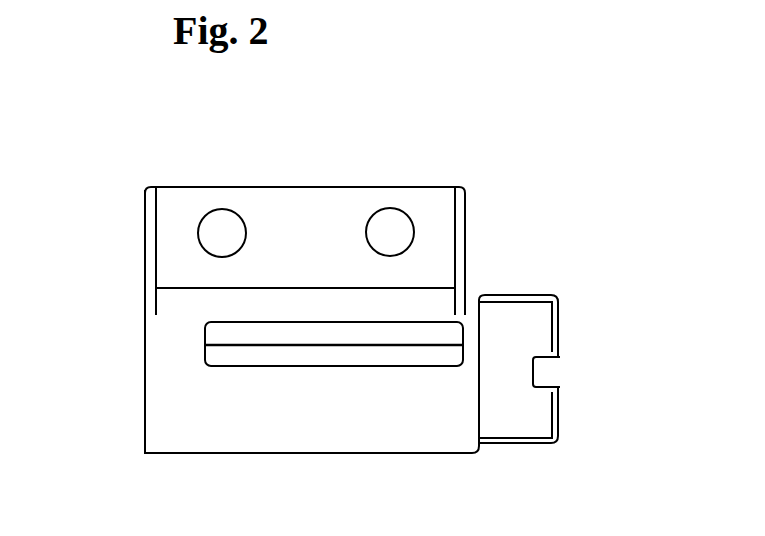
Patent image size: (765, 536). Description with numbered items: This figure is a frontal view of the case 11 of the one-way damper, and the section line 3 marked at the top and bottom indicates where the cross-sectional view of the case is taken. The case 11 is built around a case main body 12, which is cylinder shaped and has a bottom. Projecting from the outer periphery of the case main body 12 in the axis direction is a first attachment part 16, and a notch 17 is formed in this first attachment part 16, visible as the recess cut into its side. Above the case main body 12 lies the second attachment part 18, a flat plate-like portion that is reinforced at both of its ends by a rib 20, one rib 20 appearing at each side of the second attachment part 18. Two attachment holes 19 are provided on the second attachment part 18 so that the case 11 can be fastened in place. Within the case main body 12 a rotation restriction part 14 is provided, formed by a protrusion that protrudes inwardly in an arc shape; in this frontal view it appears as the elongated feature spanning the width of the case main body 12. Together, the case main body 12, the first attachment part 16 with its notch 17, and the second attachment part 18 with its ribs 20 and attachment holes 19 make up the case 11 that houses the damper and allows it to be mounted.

The section line 3- 3 is at (387, 130).
The case 11 is at (532, 281).
The case main body 12 is at (168, 410).
The rotation restriction part 14 is at (223, 337).
The first attachment part 16 is at (540, 327).
The notch 17 is at (546, 370).
The second attachment part 18 is at (288, 228).
The attachment hole 19 is at (222, 228).
The rib 20 is at (150, 246).